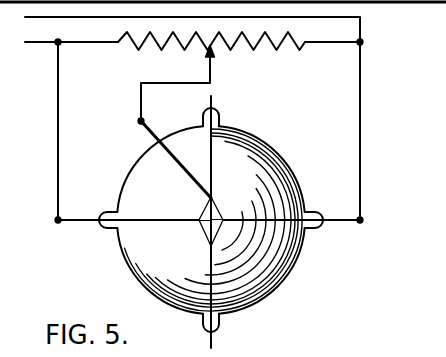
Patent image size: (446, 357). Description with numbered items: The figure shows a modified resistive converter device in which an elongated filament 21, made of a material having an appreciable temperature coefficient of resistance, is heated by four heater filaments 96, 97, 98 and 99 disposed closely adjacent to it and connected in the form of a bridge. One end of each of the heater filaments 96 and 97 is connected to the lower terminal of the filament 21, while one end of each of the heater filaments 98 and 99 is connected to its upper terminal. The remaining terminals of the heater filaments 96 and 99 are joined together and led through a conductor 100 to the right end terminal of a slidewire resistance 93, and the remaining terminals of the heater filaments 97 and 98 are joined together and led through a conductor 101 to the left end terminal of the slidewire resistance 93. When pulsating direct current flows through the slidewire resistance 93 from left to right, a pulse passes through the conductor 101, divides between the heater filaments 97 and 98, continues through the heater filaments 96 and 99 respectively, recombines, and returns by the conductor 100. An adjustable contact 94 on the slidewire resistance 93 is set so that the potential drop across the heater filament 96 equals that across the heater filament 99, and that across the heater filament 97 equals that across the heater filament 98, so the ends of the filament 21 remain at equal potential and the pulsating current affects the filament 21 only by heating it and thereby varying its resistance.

The filament 21 is at (200, 219).
The slidewire resistance 93 is at (249, 47).
The contact 94 is at (206, 51).
The heater filament 96 is at (218, 236).
The heater filament 97 is at (204, 236).
The heater filament 98 is at (206, 200).
The heater filament 99 is at (217, 204).
The conductor 100 is at (359, 130).
The conductor 101 is at (60, 134).